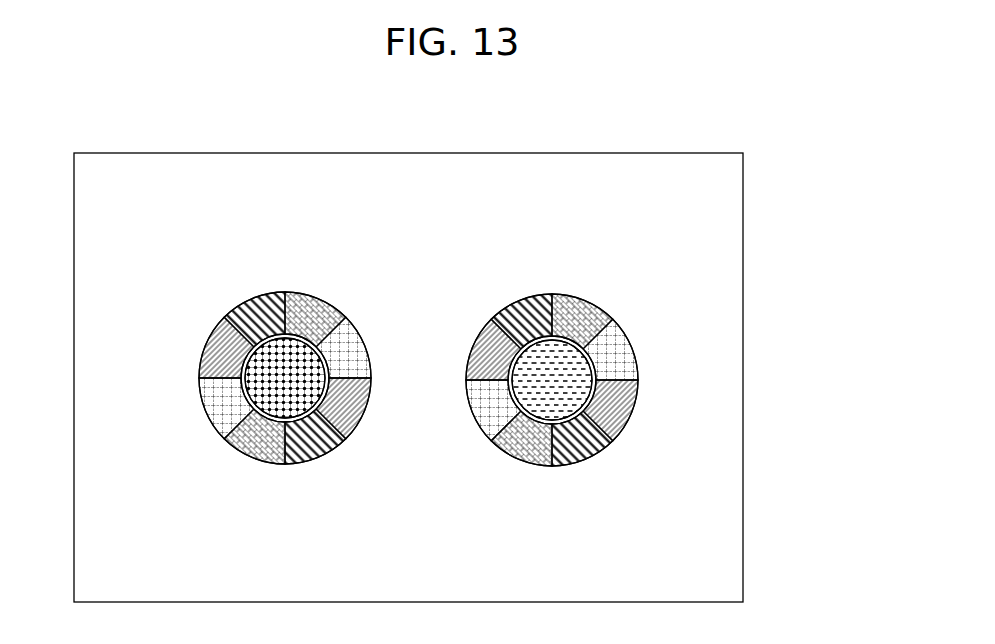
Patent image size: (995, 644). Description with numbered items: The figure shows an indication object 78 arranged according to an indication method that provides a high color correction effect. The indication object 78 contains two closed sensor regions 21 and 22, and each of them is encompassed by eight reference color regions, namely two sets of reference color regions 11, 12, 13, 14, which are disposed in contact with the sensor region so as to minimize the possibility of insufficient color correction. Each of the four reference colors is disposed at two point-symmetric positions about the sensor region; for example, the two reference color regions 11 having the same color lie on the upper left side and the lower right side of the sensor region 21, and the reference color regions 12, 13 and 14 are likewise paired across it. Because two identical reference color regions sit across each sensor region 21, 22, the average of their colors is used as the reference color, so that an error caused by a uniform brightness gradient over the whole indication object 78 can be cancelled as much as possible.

The reference color region 11 is at (403, 384).
The reference color region 12 is at (418, 378).
The reference color region 13 is at (410, 376).
The reference color region 14 is at (417, 368).
The sensor region 21 is at (221, 378).
The sensor region 22 is at (615, 380).
The indication object 78 is at (747, 129).